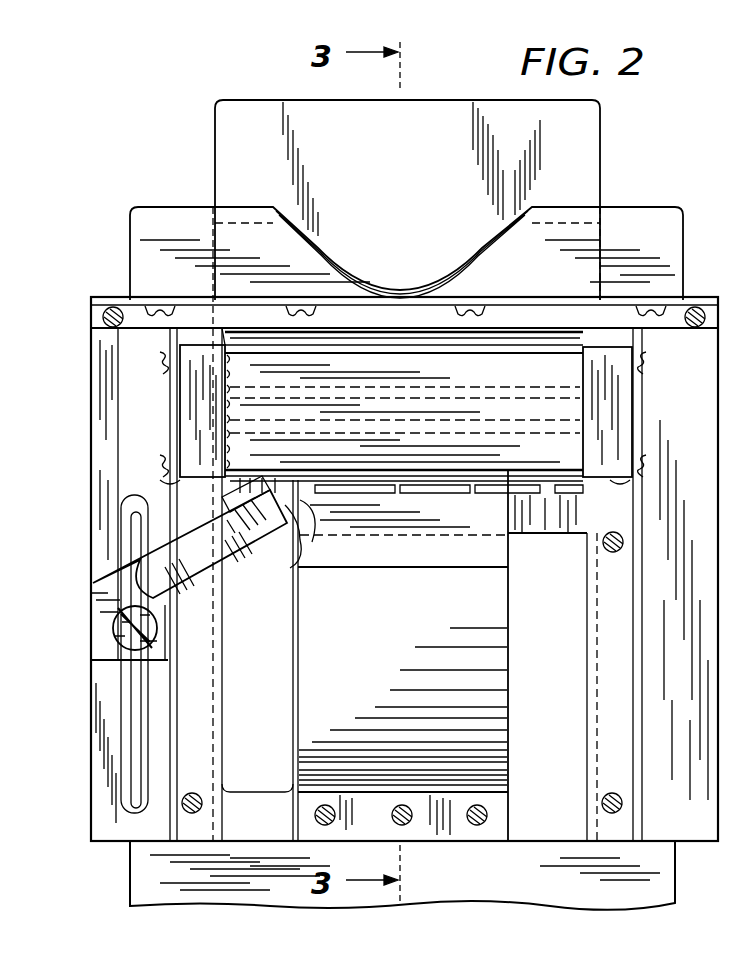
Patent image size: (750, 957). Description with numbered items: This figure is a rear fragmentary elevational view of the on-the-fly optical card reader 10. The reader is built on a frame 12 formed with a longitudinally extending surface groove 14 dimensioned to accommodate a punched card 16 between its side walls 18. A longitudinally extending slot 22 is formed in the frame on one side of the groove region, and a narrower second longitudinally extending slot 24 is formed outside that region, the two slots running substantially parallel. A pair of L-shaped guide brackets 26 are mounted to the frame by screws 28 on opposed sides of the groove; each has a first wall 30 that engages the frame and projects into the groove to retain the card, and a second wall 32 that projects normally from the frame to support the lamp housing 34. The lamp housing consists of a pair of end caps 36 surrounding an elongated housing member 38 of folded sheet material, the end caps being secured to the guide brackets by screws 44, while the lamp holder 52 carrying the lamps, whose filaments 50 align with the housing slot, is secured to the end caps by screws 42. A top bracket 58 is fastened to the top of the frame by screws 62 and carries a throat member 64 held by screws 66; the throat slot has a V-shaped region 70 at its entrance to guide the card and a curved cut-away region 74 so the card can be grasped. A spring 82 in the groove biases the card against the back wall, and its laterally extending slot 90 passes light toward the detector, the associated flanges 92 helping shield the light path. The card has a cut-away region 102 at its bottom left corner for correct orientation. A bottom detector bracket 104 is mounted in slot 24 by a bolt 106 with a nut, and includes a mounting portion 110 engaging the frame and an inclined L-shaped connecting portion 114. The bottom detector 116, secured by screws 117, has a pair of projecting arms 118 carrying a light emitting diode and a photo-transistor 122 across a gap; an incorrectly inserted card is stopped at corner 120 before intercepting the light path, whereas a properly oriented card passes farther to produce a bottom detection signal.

The on-the-fly optical card reader 10 is at (122, 212).
The frame 12 is at (91, 443).
The surface groove 14 is at (554, 590).
The punched card 16 is at (585, 131).
The side walls 18 is at (592, 592).
The longitudinally extending slot 22 is at (292, 630).
The second longitudinally extending slot 24 is at (124, 714).
The guide brackets 26 is at (168, 399).
The screws 28 is at (194, 794).
The first wall 30 is at (222, 678).
The second wall 32 is at (176, 430).
The lamp housing 34 is at (200, 330).
The end caps 36 is at (183, 380).
The housing member 38 is at (540, 365).
The screws 42 is at (172, 490).
The screws 44 is at (165, 360).
The filament 50 is at (428, 492).
The lamp holder 52 is at (575, 500).
The top bracket 58 is at (692, 303).
The screws 62 is at (686, 327).
The throat member 64 is at (665, 214).
The screws 66 is at (316, 312).
The V-shaped region 70 is at (608, 217).
The curved cut-away region 74 is at (506, 242).
The spring 82 is at (404, 660).
The central laterally extending slot 90 is at (514, 395).
The shaft 92 is at (458, 395).
The cut-away region 102 is at (232, 508).
The bottom detector bracket 104 is at (118, 586).
The bolt 106 is at (116, 637).
The mounting portion 110 is at (112, 606).
The connecting portion 114 is at (196, 574).
The bottom detector 116 is at (245, 536).
The screws 117 is at (294, 570).
The projecting arms 118 is at (323, 528).
The corner 120 is at (248, 478).
The photo-transistor 122 is at (268, 478).